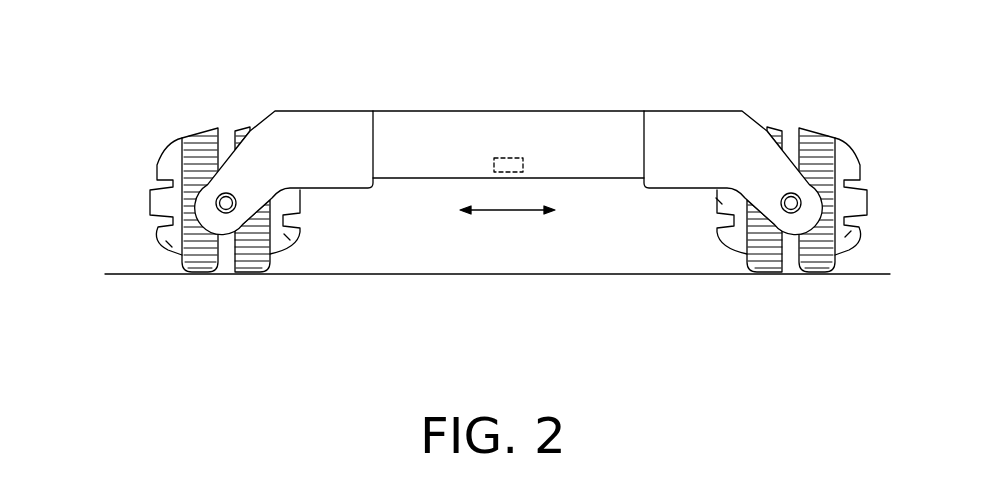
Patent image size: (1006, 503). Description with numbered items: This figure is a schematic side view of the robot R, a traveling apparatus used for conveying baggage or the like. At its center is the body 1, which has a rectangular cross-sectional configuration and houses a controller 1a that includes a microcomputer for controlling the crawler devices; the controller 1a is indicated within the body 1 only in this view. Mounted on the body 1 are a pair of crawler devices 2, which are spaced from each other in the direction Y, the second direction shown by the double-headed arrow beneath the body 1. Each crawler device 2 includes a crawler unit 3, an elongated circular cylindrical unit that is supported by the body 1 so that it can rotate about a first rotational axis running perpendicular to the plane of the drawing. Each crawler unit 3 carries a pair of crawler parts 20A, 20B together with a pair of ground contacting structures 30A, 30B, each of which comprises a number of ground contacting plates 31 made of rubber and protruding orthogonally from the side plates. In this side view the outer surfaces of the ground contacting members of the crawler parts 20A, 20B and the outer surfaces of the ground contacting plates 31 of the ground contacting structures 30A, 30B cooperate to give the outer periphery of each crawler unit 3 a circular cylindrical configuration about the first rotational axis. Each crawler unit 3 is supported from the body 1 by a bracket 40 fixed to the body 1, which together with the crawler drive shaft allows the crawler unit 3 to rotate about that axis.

The body 1 is at (603, 110).
The controller 1a is at (523, 160).
The crawler device 2 is at (127, 173).
The crawler unit 3 is at (152, 159).
The crawler part 20A is at (248, 129).
The crawler part 20B is at (195, 133).
The ground contacting structure 30A is at (304, 224).
The ground contacting structure 30B is at (147, 201).
The ground contacting plate 31 is at (169, 244).
The bracket 40 is at (322, 127).
The robot R is at (553, 93).
The direction Y is at (507, 223).